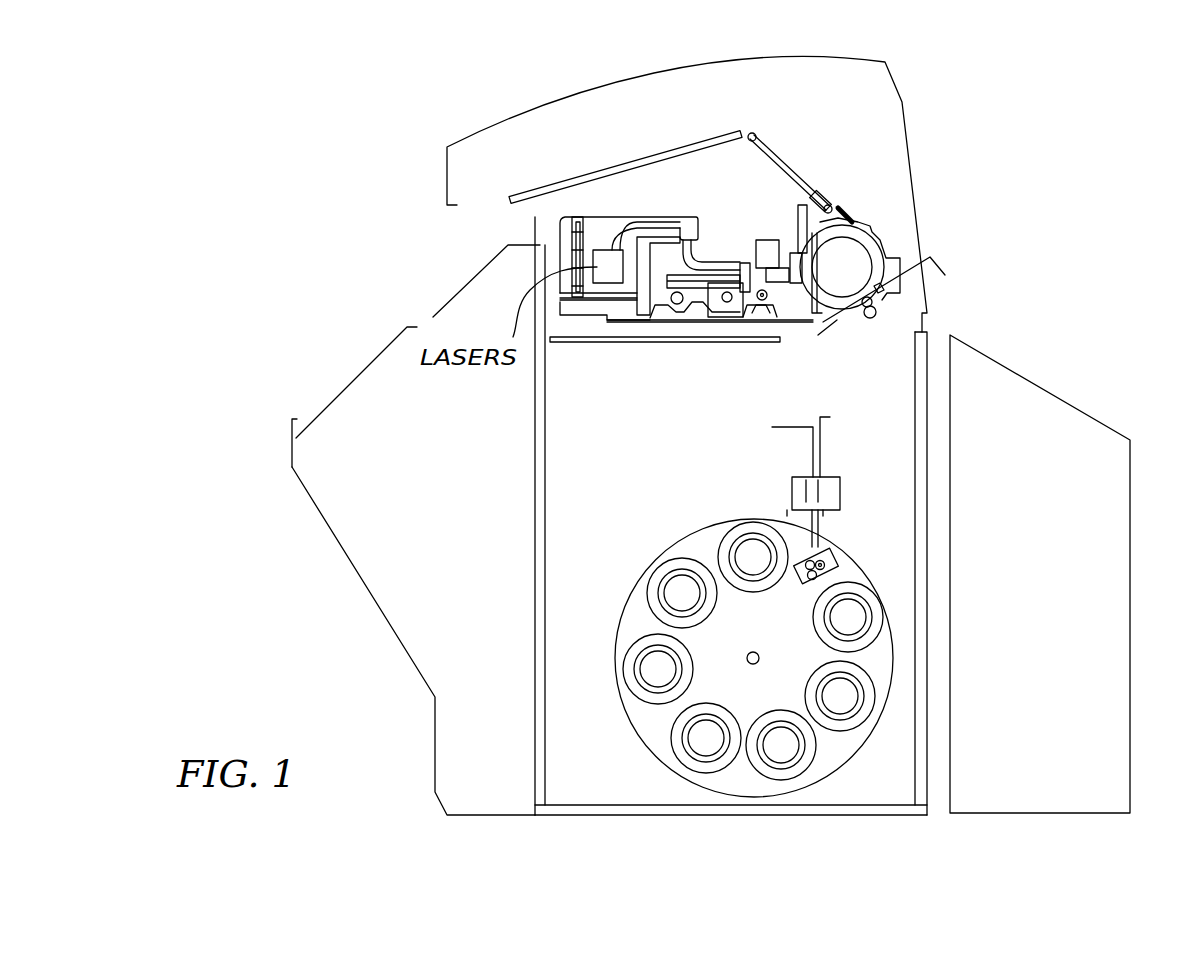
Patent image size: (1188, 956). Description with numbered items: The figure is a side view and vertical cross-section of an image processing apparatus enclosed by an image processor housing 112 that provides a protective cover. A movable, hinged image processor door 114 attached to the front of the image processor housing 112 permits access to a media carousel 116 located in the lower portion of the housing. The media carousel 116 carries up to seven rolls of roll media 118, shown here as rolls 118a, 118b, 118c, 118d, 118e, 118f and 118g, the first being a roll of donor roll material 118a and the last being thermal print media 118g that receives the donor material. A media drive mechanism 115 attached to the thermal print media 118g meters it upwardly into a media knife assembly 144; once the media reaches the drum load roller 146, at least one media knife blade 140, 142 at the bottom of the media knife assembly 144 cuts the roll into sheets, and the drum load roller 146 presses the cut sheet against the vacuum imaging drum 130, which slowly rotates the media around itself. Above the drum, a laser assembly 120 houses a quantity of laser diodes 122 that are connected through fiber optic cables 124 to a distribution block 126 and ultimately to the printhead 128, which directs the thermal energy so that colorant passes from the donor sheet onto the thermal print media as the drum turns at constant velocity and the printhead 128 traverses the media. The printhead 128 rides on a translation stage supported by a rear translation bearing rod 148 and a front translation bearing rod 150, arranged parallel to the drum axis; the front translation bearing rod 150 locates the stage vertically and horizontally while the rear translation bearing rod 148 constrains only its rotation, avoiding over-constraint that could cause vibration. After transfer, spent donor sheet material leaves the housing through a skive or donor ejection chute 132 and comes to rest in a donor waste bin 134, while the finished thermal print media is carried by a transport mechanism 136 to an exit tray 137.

The image processor housing 112 is at (517, 112).
The image processor door 114 is at (353, 568).
The media drive mechanism 115 is at (833, 570).
The media carousel 116 is at (612, 673).
The roll media 118 is at (922, 621).
The roll of donor roll material 118a is at (752, 555).
The roll media 118b is at (842, 632).
The roll media 118c is at (847, 693).
The roll media 118d is at (787, 745).
The roll media 118e is at (705, 740).
The roll media 118f is at (655, 665).
The thermal print media 118g is at (675, 588).
The laser assembly 120 is at (581, 202).
The laser diodes 122 is at (597, 253).
The fiber optic cables 124 is at (660, 223).
The distribution block 126 is at (697, 217).
The printhead 128 is at (785, 253).
The vacuum imaging drum 130 is at (858, 265).
The donor ejection chute 132 is at (947, 258).
The donor waste bin 134 is at (1020, 372).
The transport mechanism 136 is at (787, 158).
The exit tray 137 is at (285, 402).
The media knife blade 140 is at (845, 510).
The media knife blade 142 is at (826, 536).
The media knife assembly 144 is at (842, 477).
The drum load roller 146 is at (860, 323).
The rear translation bearing rod 148 is at (667, 313).
The front translation bearing rod 150 is at (757, 313).